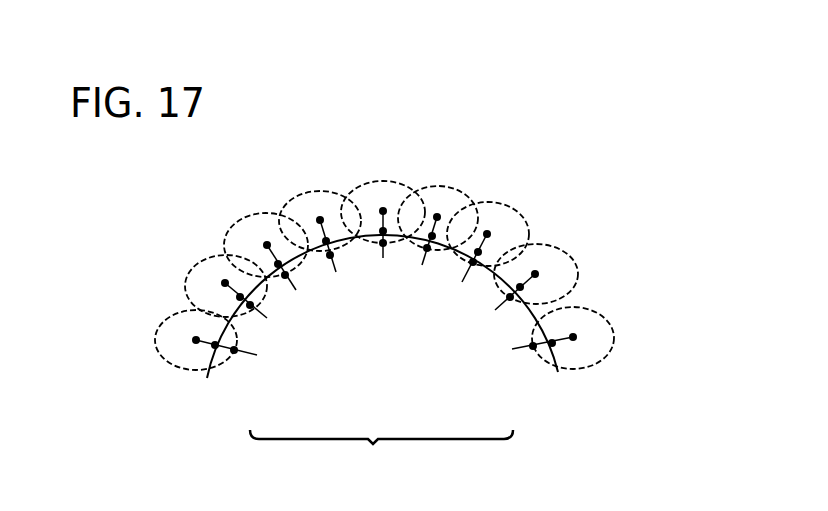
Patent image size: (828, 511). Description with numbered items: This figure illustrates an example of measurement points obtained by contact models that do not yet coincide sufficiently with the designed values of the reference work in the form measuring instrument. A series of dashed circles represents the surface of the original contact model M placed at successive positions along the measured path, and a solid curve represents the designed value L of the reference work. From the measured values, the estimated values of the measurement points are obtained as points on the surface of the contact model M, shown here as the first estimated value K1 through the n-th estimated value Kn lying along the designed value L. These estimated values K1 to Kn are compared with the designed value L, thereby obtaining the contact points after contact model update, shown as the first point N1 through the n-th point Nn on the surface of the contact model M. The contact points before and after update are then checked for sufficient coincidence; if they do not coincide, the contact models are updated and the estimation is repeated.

The contact model M is at (583, 258).
The designed value of the reference work L is at (558, 372).
The contact point after contact model update N1 is at (570, 372).
The contact point after contact model update Nn is at (223, 384).
The estimated value of measurement point K1 is at (533, 348).
The estimated value of measurement point Kn is at (235, 351).